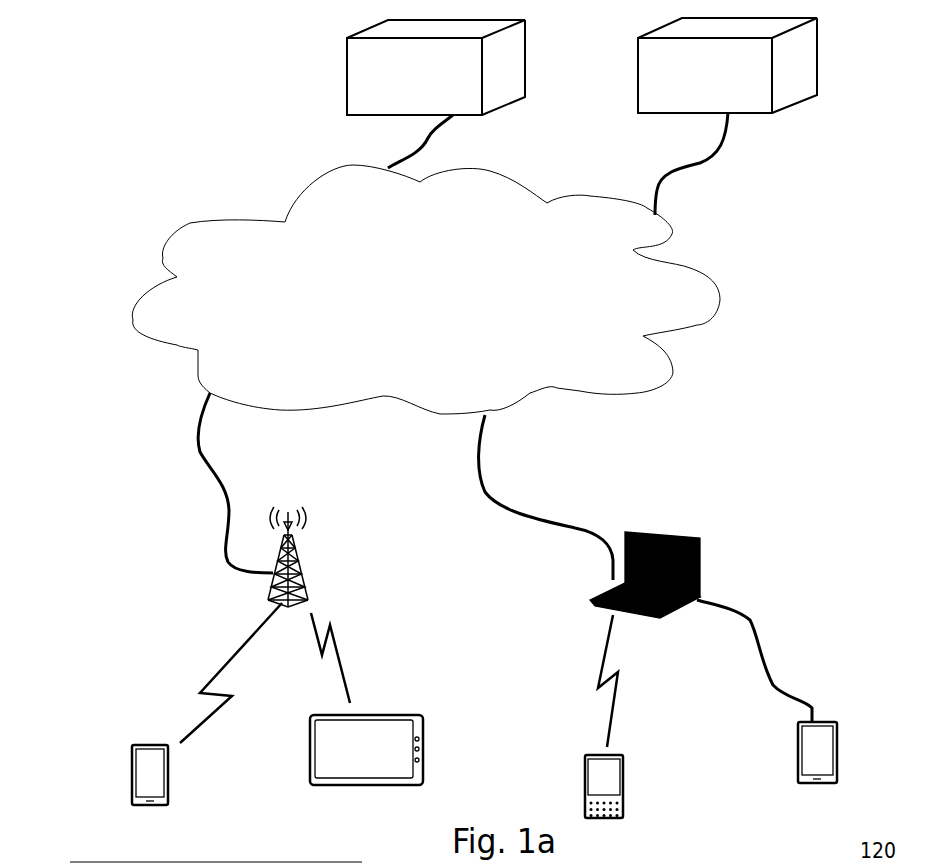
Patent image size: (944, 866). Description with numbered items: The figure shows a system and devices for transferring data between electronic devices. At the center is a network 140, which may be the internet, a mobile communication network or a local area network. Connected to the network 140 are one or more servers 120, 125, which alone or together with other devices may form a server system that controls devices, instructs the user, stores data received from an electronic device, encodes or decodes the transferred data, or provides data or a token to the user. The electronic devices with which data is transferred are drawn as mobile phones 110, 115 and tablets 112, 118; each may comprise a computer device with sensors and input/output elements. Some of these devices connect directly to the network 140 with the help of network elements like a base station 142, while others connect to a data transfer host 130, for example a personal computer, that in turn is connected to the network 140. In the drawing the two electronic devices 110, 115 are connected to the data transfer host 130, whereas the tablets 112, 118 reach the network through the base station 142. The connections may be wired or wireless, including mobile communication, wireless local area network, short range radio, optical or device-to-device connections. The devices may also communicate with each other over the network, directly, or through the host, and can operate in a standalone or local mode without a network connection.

The server 120 is at (528, 57).
The server 125 is at (810, 80).
The network 140 is at (715, 273).
The base station 142 is at (307, 550).
The data transfer host 130 is at (700, 545).
The tablet 112 is at (130, 757).
The tablet 118 is at (423, 718).
The mobile phone 115 is at (587, 785).
The mobile phone 110 is at (785, 750).